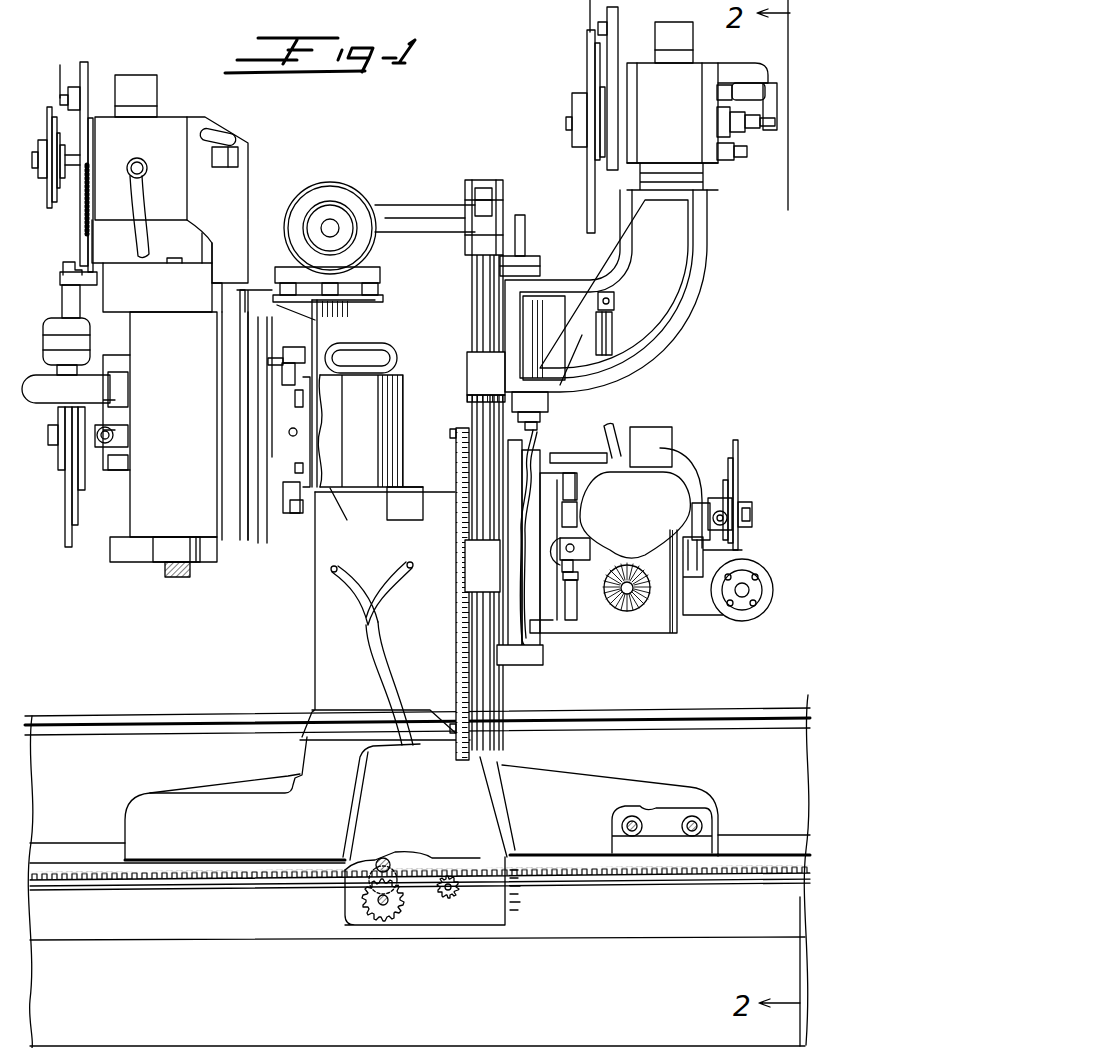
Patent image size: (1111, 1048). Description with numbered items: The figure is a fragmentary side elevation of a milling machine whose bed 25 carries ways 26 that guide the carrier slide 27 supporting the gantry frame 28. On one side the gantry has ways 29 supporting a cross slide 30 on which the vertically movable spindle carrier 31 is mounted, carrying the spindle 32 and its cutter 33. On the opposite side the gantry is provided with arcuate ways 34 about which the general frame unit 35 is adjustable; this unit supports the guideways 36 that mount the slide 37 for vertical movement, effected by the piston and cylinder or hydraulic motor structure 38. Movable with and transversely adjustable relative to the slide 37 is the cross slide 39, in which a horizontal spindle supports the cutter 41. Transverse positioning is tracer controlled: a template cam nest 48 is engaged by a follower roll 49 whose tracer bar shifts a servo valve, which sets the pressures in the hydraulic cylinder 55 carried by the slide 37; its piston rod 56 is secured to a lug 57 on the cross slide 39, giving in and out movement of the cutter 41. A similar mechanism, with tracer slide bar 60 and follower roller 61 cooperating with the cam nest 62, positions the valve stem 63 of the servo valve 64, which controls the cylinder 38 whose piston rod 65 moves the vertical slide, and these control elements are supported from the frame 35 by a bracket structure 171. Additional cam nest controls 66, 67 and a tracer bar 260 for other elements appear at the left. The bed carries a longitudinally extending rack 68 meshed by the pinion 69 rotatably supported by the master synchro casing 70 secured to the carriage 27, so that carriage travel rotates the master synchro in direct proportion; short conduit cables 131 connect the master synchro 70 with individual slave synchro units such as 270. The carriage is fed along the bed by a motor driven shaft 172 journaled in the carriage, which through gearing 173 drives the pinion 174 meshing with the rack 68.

The bed 25 is at (758, 976).
The ways 26 is at (768, 838).
The carrier slide 27 is at (706, 790).
The gantry frame 28 is at (315, 660).
The ways 29 is at (298, 328).
The cross slide 30 is at (248, 350).
The spindle carrier 31 is at (186, 399).
The spindle 32 is at (164, 565).
The cutter 33 is at (180, 578).
The arcuate ways 34 is at (476, 202).
The general frame unit 35 is at (500, 232).
The guideways 36 is at (518, 660).
The slide 37 is at (575, 497).
The piston and cylinder or hydraulic motor structure 38 is at (541, 268).
The cross slide 39 is at (668, 468).
The cutter 41 is at (612, 600).
The template cam nest 48 is at (753, 478).
The follower roll 49 is at (60, 80).
The hydraulic cylinder 55 is at (578, 570).
The piston rod 56 is at (573, 546).
The lug 57 is at (588, 557).
The tracer slide bar 60 is at (608, 222).
The follower roller 61 is at (590, 16).
The cam nest 62 is at (587, 60).
The valve stem 63 is at (616, 305).
The servo valve 64 is at (598, 322).
The piston rod 65 is at (520, 432).
The cam nest control 66 is at (48, 118).
The cam nest control 67 is at (66, 537).
The rack 68 is at (618, 870).
The pinion 69 is at (440, 897).
The master synchro casing 70 is at (515, 912).
The conduit cable 131 is at (378, 660).
The bracket structure 171 is at (706, 275).
The motor driven shaft 172 is at (386, 860).
The gearing 173 is at (370, 882).
The pinion 174 is at (393, 920).
The tracer bar 260 is at (84, 200).
The slave synchro unit 270 is at (165, 118).